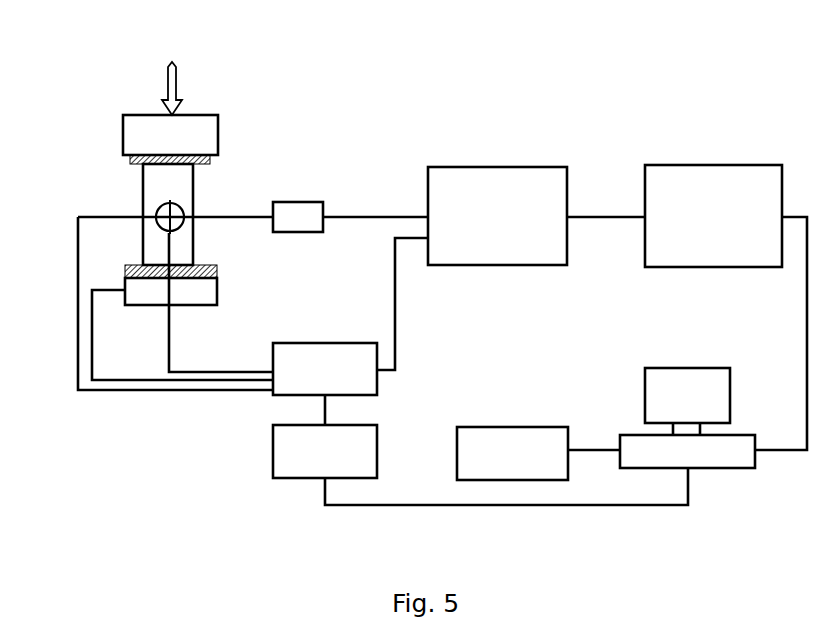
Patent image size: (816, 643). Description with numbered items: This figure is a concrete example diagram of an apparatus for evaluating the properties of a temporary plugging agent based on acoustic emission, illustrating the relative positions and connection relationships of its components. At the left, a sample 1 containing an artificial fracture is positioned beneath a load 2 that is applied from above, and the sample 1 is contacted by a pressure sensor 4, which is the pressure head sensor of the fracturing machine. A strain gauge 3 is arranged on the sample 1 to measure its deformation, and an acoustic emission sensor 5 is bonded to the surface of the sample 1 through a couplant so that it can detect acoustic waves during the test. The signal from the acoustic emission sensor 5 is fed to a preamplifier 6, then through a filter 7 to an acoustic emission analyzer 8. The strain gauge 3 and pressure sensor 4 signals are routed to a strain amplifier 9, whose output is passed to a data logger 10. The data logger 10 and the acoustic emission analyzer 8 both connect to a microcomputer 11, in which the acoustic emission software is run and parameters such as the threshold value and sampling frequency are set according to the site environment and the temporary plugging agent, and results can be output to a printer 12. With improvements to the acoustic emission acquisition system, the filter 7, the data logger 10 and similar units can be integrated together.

The sample 1 is at (178, 198).
The load 2 is at (172, 78).
The strain gauge 3 is at (142, 188).
The pressure sensor 4 is at (127, 273).
The acoustic emission sensor 5 is at (200, 212).
The preamplifier 6 is at (299, 202).
The filter 7 is at (497, 167).
The acoustic emission analyzer 8 is at (702, 165).
The strain amplifier 9 is at (325, 343).
The data logger 10 is at (311, 451).
The microcomputer 11 is at (696, 368).
The printer 12 is at (514, 427).